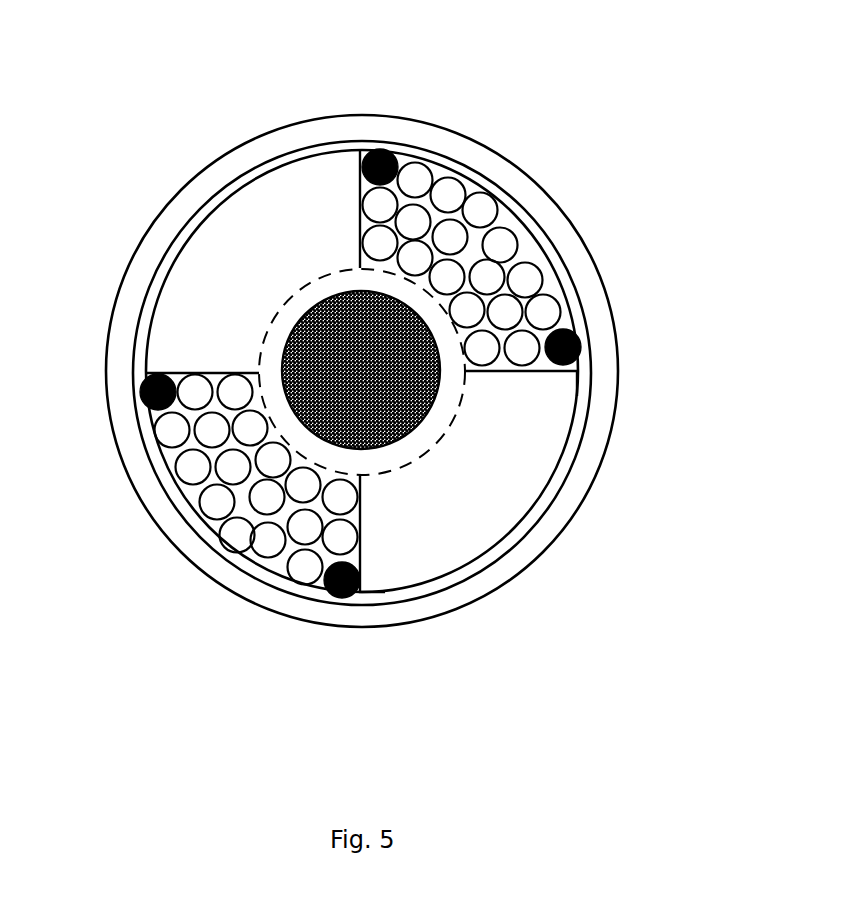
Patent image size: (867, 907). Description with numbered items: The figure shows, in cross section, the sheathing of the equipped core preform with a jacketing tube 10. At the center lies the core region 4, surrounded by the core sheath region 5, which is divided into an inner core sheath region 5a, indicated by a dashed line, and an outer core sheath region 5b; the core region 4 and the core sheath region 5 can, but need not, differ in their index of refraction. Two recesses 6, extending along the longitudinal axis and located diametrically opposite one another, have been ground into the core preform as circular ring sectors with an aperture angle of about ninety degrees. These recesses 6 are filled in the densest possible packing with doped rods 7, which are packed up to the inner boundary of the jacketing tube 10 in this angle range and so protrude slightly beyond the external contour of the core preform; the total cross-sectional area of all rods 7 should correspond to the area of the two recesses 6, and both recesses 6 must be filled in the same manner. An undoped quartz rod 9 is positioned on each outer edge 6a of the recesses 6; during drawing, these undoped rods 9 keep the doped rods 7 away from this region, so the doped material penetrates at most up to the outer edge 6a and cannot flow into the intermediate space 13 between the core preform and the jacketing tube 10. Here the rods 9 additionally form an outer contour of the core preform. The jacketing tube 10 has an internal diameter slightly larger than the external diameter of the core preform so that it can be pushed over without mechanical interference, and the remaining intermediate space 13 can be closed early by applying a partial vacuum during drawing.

The core region 4 is at (388, 427).
The core sheath region 5 is at (547, 482).
The inner core sheath region 5a is at (297, 303).
The outer core sheath region 5b is at (337, 232).
The recesses 6 is at (351, 377).
The outer edges 6a is at (580, 372).
The rods 7 is at (480, 207).
The undoped quartz rod 9 is at (381, 150).
The jacketing tube 10 is at (597, 442).
The intermediate space 13 is at (437, 582).